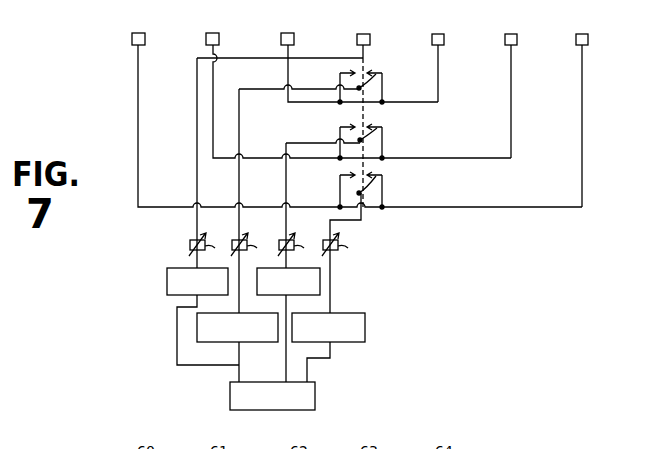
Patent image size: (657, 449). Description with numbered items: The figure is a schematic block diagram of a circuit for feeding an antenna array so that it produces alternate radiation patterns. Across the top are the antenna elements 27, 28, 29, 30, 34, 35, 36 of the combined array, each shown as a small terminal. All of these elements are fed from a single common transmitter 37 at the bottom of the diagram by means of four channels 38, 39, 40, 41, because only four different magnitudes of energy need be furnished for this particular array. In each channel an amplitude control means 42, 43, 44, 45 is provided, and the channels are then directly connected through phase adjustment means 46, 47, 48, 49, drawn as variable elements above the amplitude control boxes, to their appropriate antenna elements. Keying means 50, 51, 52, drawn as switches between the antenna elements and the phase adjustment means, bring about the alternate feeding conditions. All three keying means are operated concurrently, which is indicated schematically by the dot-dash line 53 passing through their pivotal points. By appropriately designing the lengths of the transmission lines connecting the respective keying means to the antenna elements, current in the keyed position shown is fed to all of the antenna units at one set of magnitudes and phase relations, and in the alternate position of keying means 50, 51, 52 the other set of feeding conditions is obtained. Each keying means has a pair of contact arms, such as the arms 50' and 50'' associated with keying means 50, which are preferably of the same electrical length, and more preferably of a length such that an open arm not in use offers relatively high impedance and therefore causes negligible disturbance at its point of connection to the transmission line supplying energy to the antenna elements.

The antenna element 27 is at (151, 18).
The antenna element 28 is at (223, 18).
The antenna element 29 is at (299, 18).
The antenna element 30 is at (371, 19).
The antenna element 34 is at (446, 18).
The antenna element 35 is at (522, 18).
The antenna element 36 is at (594, 18).
The transmitter 37 is at (263, 410).
The channel 38 is at (199, 366).
The channel 39 is at (238, 346).
The channel 40 is at (286, 350).
The channel 41 is at (323, 362).
The amplitude control means 42 is at (167, 283).
The amplitude control means 43 is at (197, 323).
The amplitude control means 44 is at (320, 287).
The amplitude control means 45 is at (365, 320).
The phase adjustment means 46 is at (207, 249).
The phase adjustment means 47 is at (249, 249).
The phase adjustment means 48 is at (295, 249).
The phase adjustment means 49 is at (341, 249).
The keying means 50 is at (361, 79).
The contact arm 50' is at (392, 65).
The contact arm 50'' is at (330, 77).
The keying means 51 is at (369, 133).
The keying means 52 is at (382, 188).
The dot-dash line 53 is at (367, 132).